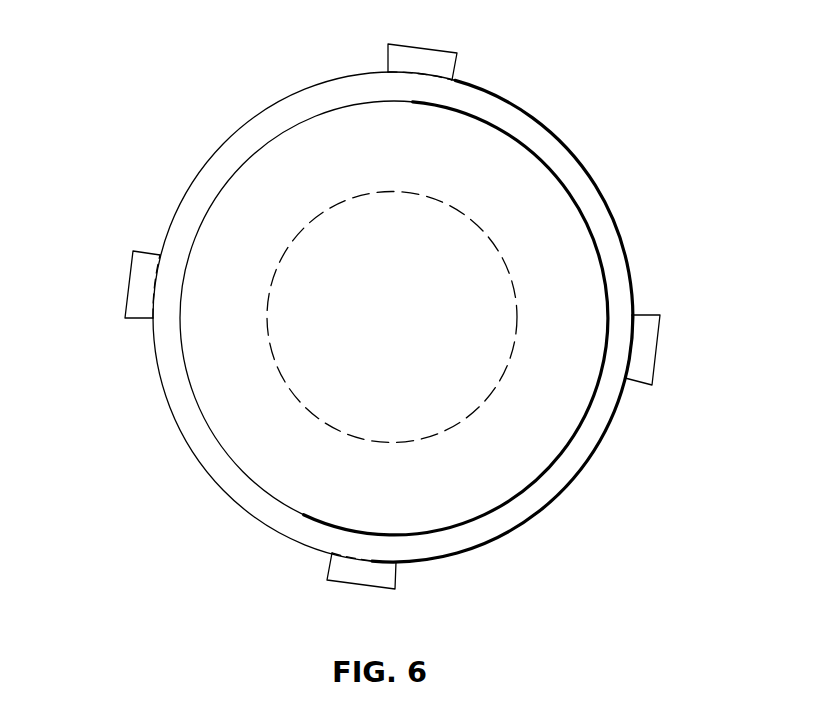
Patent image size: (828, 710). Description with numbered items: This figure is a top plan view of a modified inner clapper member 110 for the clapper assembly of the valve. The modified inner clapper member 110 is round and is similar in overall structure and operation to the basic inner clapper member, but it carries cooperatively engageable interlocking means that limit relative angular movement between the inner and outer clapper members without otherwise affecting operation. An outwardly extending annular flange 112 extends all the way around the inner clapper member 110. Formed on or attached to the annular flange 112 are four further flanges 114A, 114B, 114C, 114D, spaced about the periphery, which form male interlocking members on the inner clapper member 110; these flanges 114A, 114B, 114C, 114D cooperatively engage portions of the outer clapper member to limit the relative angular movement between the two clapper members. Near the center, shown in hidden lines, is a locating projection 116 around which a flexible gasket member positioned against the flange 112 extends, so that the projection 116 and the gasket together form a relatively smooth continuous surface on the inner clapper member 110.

The modified inner clapper member 110 is at (580, 150).
The annular flange 112 is at (598, 214).
The flange 114A is at (383, 580).
The flange 114B is at (645, 348).
The flange 114C is at (438, 67).
The flange 114D is at (126, 305).
The locating projection 116 is at (455, 380).